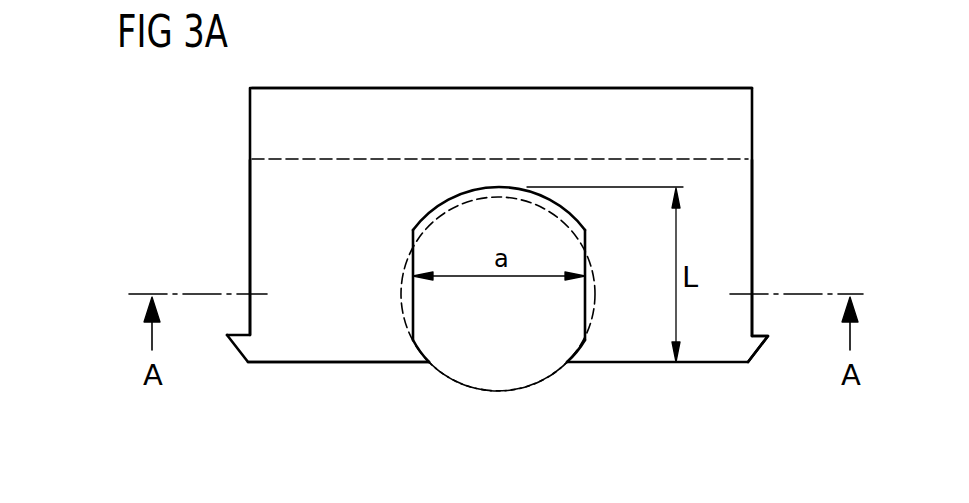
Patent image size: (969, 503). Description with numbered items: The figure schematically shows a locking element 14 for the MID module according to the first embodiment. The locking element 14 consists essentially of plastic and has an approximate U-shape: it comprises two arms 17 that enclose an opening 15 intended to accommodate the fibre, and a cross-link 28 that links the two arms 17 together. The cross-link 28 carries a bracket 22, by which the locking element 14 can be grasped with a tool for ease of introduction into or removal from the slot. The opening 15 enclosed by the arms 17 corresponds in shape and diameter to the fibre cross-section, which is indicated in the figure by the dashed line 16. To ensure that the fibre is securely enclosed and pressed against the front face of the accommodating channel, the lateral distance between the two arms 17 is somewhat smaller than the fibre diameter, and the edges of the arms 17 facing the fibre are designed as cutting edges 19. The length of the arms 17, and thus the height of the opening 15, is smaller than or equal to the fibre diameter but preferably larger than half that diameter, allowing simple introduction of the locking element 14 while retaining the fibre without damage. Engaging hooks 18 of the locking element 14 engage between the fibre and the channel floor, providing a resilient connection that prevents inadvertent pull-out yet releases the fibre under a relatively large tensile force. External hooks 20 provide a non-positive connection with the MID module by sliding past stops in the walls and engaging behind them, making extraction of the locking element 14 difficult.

The locking element 14 is at (740, 124).
The opening 15 is at (470, 377).
The dashed line 16 is at (550, 377).
The arms 17 is at (740, 247).
The engaging hooks 18 is at (588, 352).
The cutting edges 19 is at (586, 272).
The external hooks 20 is at (762, 348).
The bracket 22 is at (508, 98).
The cross-link 28 is at (395, 172).